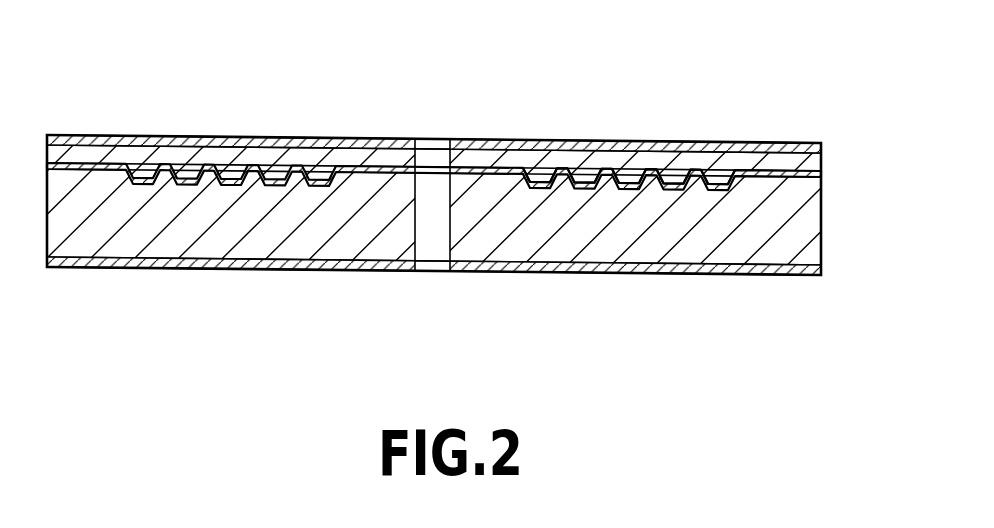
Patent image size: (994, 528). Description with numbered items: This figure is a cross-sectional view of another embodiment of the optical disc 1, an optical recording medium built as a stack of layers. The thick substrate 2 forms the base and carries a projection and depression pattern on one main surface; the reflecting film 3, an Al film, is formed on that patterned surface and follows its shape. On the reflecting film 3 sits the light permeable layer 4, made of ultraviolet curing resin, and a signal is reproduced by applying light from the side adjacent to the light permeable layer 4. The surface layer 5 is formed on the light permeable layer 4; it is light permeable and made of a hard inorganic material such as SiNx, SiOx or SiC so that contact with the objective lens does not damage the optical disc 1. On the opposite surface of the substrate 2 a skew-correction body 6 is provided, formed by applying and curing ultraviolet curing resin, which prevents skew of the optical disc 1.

The optical disc 1 is at (762, 108).
The substrate 2 is at (815, 228).
The reflecting film 3 is at (700, 168).
The light permeable layer 4 is at (815, 165).
The surface layer 5 is at (598, 138).
The skew-correction body 6 is at (625, 273).